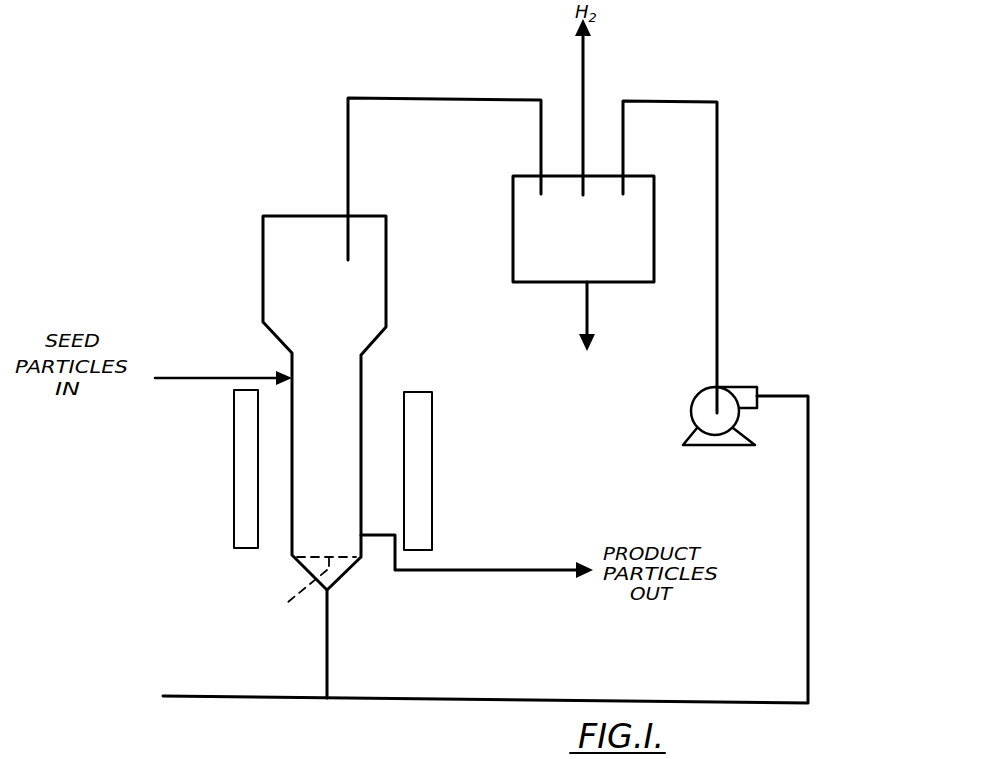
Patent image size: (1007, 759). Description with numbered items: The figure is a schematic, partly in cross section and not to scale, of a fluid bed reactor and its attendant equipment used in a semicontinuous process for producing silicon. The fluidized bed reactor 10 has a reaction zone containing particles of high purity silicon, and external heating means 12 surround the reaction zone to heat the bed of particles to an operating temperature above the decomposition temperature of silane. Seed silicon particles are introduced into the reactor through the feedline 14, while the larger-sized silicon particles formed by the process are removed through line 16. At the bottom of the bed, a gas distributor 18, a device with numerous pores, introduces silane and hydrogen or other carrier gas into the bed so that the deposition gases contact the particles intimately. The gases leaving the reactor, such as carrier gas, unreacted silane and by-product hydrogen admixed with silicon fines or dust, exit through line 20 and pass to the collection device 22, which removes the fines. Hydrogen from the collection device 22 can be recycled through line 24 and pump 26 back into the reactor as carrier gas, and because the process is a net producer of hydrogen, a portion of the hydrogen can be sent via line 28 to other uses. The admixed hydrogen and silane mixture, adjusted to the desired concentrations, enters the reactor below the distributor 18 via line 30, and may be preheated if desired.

The reactor 10 is at (583, 62).
The external heating means 12 is at (234, 469).
The feedline 14 is at (232, 377).
The line 16 is at (490, 575).
The gas distributor 18 is at (288, 602).
The line 20 is at (348, 163).
The collection device 22 is at (655, 259).
The line 24 is at (675, 101).
The pump 26 is at (745, 388).
The line 28 is at (808, 578).
The line 30 is at (327, 646).